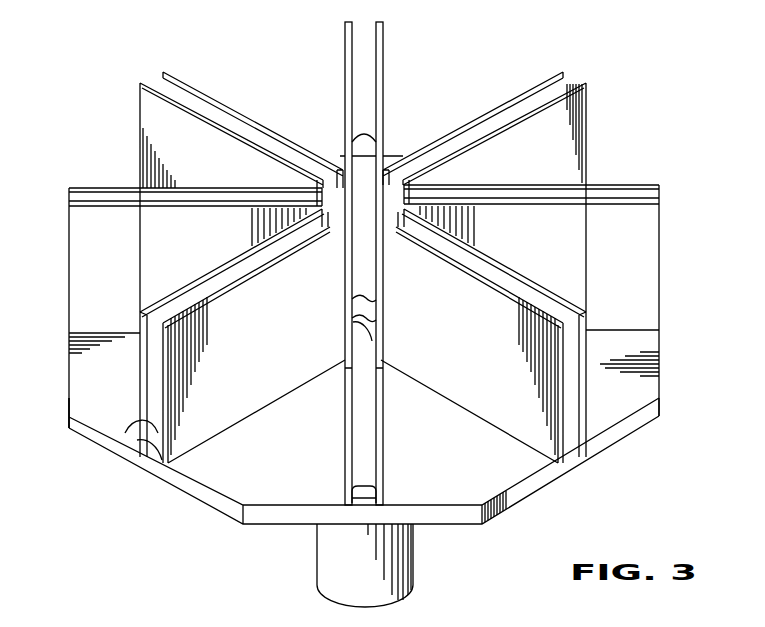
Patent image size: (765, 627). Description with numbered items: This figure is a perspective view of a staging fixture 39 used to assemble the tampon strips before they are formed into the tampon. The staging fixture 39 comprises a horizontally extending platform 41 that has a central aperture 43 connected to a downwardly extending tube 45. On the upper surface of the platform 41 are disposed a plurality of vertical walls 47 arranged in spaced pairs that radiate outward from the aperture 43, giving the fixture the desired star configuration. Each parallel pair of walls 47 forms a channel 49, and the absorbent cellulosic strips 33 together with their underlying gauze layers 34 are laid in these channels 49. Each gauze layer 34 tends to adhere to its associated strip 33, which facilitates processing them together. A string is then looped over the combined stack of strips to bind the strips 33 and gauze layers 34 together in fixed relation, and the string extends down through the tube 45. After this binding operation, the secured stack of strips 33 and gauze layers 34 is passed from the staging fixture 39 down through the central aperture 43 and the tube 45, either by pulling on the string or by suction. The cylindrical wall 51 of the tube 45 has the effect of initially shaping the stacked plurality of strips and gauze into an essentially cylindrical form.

The absorbent cellulosic strip 33 is at (126, 432).
The gauze layer 34 is at (150, 463).
The staging fixture 39 is at (303, 462).
The platform 41 is at (70, 417).
The central aperture 43 is at (363, 183).
The tube 45 is at (327, 602).
The vertical wall 47 is at (345, 33).
The channel 49 is at (365, 27).
The cylindrical wall 51 is at (416, 543).